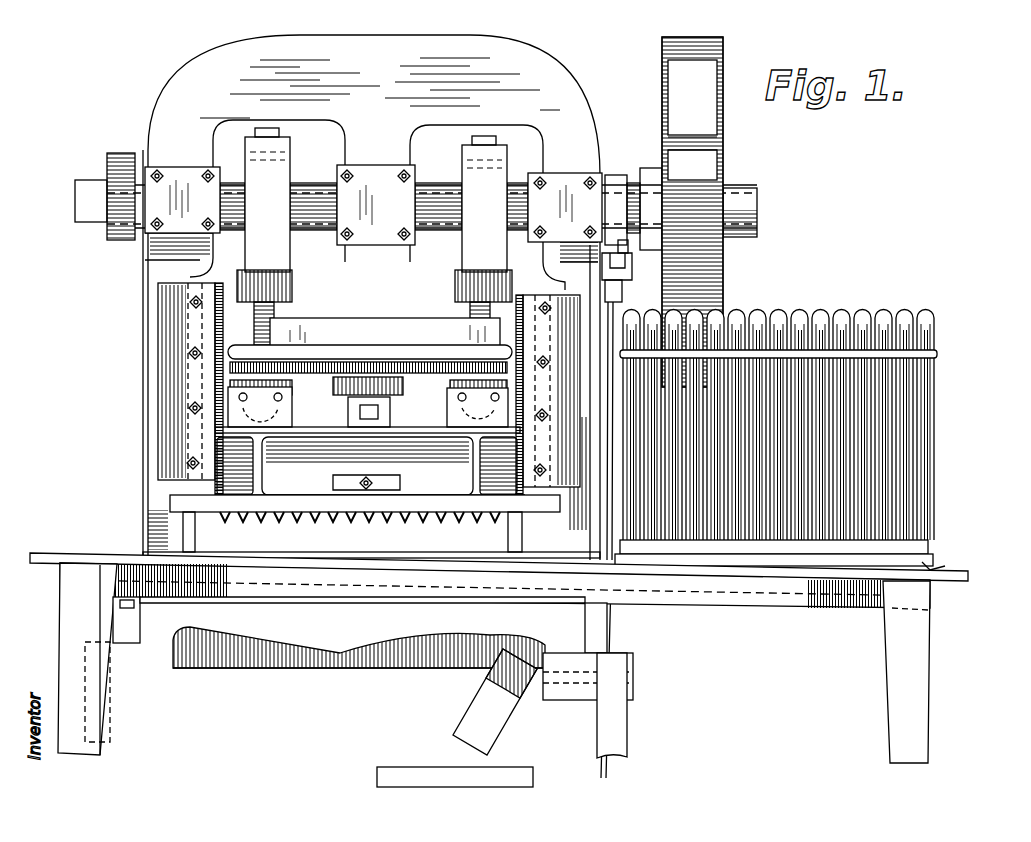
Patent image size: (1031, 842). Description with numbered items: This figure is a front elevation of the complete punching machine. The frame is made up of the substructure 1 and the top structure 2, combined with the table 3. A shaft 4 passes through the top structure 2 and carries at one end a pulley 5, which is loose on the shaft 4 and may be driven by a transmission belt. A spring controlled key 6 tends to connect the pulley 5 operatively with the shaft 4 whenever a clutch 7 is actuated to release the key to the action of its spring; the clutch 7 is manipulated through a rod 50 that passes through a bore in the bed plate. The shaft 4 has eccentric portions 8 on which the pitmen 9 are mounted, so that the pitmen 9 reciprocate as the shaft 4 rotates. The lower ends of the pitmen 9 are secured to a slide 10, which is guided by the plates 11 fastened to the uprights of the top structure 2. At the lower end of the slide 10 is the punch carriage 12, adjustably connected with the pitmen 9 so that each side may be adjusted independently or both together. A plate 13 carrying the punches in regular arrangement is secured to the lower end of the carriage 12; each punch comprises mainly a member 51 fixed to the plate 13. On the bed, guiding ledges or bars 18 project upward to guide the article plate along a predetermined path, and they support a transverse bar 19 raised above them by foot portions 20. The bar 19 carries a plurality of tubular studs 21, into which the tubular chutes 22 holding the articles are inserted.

The substructure 1 is at (128, 711).
The top structure 2 is at (588, 106).
The table 3 is at (712, 592).
The shaft 4 is at (700, 197).
The pulley 5 is at (725, 70).
The spring controlled key 6 is at (606, 252).
The clutch 7 is at (630, 261).
The eccentric portions 8 is at (282, 172).
The pitmen 9 is at (280, 268).
The slide 10 is at (362, 326).
The plates 11 is at (172, 310).
The punch carriage 12 is at (320, 429).
The plate 13 is at (160, 501).
The guiding ledges or bars 18 is at (296, 563).
The transverse bar 19 is at (937, 352).
The foot portions 20 is at (946, 566).
The tubular studs 21 is at (928, 543).
The tubular chutes 22 is at (939, 327).
The rod 50 is at (615, 310).
The punch member 51 is at (252, 517).